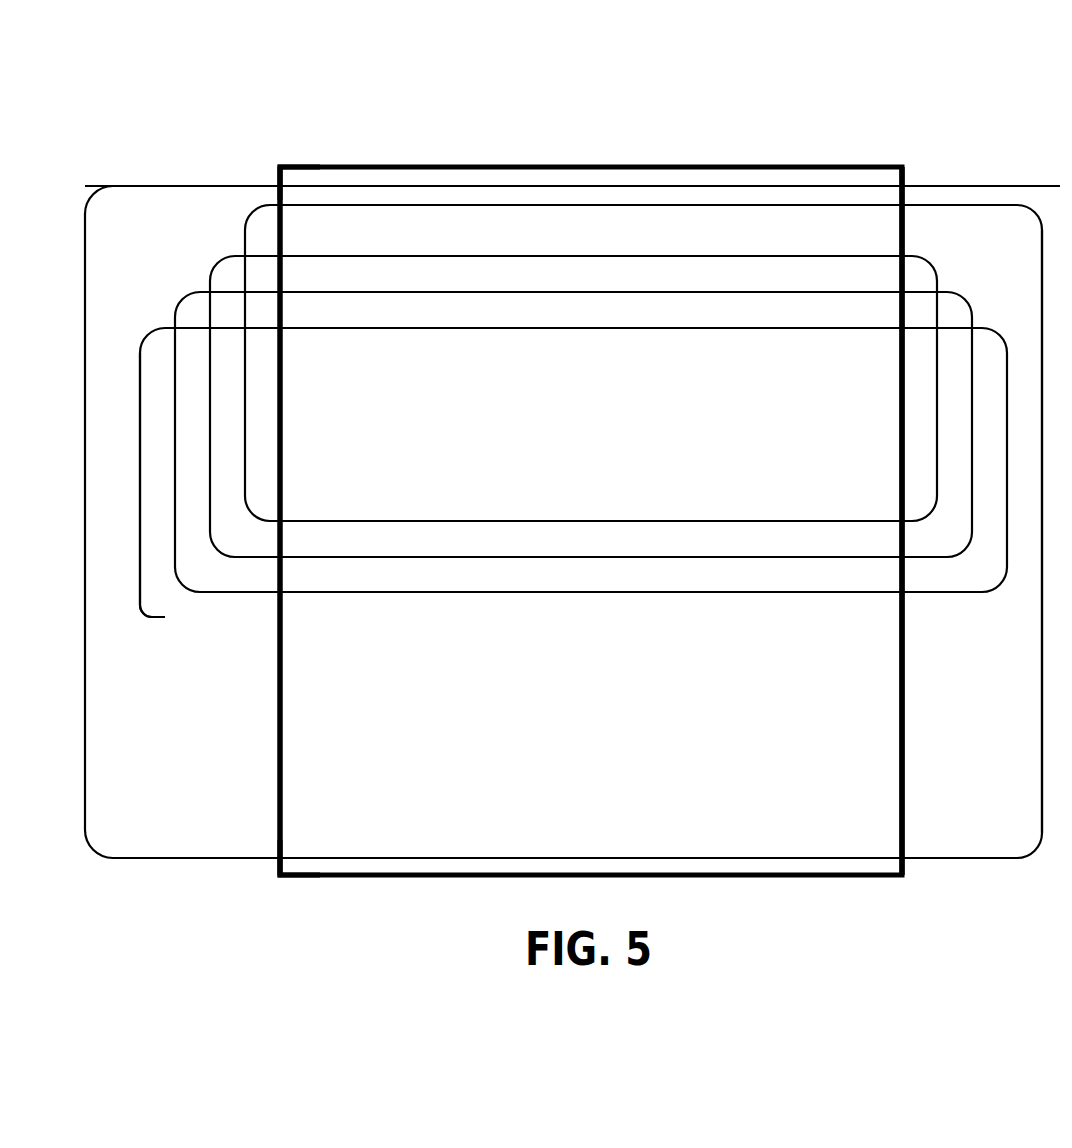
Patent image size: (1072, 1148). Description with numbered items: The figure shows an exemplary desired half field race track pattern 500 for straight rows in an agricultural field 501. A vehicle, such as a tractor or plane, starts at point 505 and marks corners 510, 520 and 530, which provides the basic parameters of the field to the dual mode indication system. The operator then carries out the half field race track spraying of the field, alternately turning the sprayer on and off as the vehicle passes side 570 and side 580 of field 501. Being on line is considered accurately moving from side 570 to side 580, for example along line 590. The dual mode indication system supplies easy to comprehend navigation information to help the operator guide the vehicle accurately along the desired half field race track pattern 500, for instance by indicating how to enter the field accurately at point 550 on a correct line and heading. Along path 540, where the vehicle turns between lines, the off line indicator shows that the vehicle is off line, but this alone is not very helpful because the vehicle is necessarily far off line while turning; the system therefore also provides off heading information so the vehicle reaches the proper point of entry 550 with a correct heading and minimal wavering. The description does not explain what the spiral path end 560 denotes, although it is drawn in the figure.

The desired half field race track pattern 500 is at (598, 97).
The agricultural field 501 is at (590, 150).
The start point 505 is at (1040, 168).
The corner 510 is at (902, 148).
The corner 520 is at (280, 148).
The corner 530 is at (280, 896).
The path 540 is at (1026, 237).
The point of entry 550 is at (875, 222).
The spiral path end 560 is at (175, 496).
The side of field 570 is at (299, 752).
The side of field 580 is at (883, 752).
The line 590 is at (589, 503).